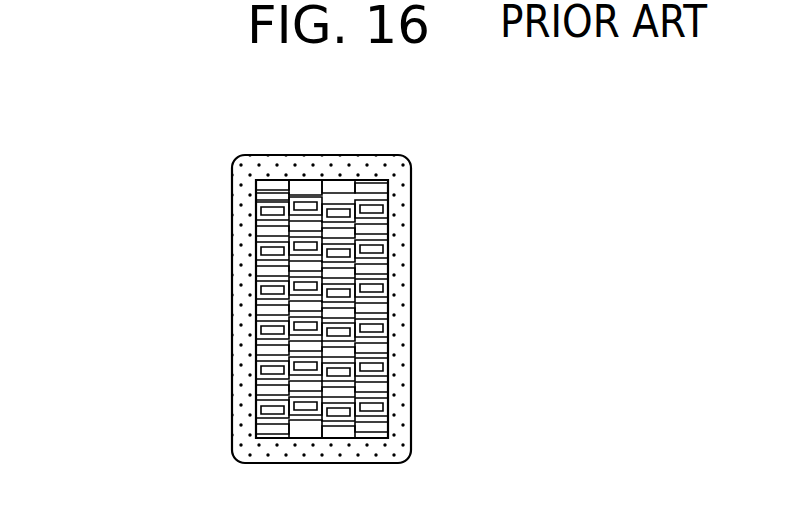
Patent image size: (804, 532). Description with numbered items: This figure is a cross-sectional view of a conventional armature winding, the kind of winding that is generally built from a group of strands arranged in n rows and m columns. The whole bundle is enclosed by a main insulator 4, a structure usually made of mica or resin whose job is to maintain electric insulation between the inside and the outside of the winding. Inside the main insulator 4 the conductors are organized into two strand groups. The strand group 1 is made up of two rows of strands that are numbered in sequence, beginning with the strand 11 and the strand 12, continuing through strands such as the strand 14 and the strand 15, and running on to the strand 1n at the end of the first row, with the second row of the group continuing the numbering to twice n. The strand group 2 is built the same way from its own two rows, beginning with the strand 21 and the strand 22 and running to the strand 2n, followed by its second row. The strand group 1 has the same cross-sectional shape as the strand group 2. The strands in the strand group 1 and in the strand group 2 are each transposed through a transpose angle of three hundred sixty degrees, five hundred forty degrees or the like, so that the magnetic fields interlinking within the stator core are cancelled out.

The strand group 1 is at (421, 267).
The strand group 2 is at (231, 268).
The main insulator 4 is at (412, 323).
The strand 11 is at (428, 190).
The strand 12 is at (383, 224).
The strand 14 is at (385, 250).
The strand 15 is at (383, 266).
The strand 21 is at (258, 196).
The strand 22 is at (297, 224).
The strand 2n is at (290, 432).
The strand 1n is at (373, 432).